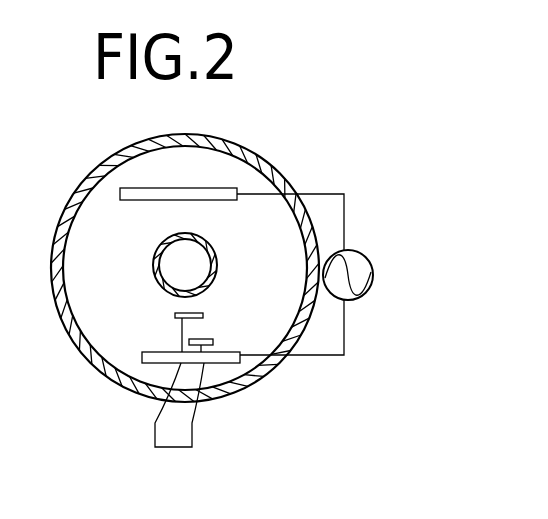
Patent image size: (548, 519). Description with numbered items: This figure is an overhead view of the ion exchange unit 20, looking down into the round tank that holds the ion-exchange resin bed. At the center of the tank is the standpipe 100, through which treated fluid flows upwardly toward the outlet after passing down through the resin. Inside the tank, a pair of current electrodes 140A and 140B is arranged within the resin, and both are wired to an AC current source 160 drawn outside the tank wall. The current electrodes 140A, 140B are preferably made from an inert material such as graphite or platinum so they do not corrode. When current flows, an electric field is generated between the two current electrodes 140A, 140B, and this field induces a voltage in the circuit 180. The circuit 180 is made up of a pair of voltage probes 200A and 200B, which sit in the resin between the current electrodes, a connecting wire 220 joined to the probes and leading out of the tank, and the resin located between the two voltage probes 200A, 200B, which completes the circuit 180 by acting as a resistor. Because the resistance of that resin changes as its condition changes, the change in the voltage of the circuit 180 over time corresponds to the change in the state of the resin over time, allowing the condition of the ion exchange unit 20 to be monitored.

The ion exchange unit 20 is at (65, 178).
The standpipe 100 is at (176, 263).
The current electrode 140A is at (228, 187).
The current electrode 140B is at (237, 352).
The AC current source 160 is at (356, 252).
The circuit 180 is at (160, 327).
The voltage probe 200A is at (215, 346).
The voltage probe 200B is at (205, 310).
The connecting wire 220 is at (170, 447).